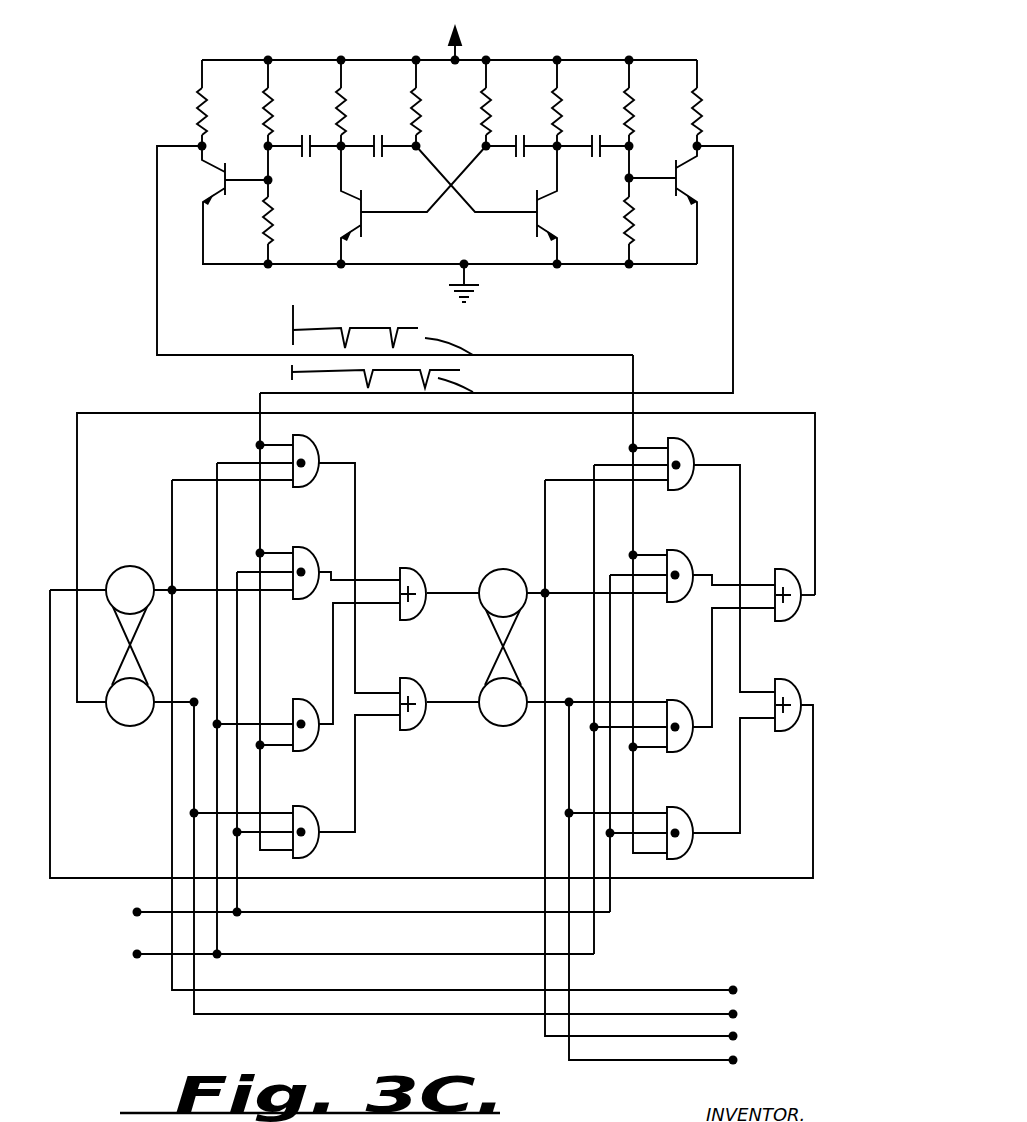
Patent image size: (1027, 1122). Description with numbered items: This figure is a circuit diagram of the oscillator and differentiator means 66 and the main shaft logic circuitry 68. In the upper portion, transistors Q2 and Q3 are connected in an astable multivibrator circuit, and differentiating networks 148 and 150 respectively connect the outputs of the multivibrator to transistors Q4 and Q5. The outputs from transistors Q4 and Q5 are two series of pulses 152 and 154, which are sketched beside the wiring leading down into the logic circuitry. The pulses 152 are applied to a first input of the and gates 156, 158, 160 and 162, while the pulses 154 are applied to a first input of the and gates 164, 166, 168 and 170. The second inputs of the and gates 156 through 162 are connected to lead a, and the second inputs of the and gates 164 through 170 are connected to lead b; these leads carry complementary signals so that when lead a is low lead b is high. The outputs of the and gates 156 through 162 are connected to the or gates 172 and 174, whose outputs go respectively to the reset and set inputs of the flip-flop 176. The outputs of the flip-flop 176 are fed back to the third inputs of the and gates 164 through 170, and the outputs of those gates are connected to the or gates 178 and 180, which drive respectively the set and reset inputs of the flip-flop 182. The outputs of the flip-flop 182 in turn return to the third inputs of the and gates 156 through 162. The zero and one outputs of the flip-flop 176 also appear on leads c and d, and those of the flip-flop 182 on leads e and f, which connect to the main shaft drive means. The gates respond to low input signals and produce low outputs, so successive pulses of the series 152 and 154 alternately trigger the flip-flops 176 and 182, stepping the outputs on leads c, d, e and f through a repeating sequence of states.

The oscillator and differentiator means 66 is at (445, 199).
The main shaft logic circuitry 68 is at (432, 714).
The differentiating network 148 is at (284, 150).
The differentiating network 150 is at (618, 158).
The series of pulses 152 is at (290, 338).
The series of pulses 154 is at (290, 380).
The and gate 156 is at (690, 447).
The and gate 158 is at (700, 546).
The and gate 160 is at (692, 680).
The and gate 162 is at (695, 800).
The and gate 164 is at (308, 443).
The and gate 166 is at (302, 553).
The and gate 168 is at (295, 700).
The and gate 170 is at (294, 808).
The or gate 172 is at (800, 565).
The or gate 174 is at (786, 734).
The flip-flop 176 is at (128, 648).
The or gate 178 is at (418, 566).
The or gate 180 is at (406, 730).
The flip-flop 182 is at (495, 660).
The transistor Q2 is at (413, 205).
The transistor Q3 is at (530, 225).
The transistor Q4 is at (228, 190).
The transistor Q5 is at (665, 195).